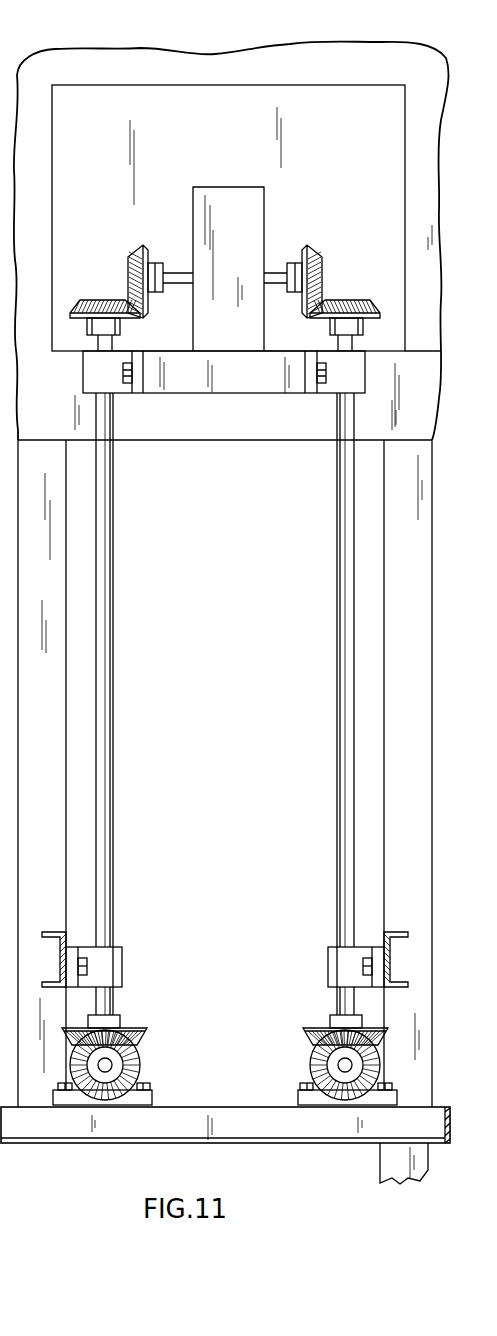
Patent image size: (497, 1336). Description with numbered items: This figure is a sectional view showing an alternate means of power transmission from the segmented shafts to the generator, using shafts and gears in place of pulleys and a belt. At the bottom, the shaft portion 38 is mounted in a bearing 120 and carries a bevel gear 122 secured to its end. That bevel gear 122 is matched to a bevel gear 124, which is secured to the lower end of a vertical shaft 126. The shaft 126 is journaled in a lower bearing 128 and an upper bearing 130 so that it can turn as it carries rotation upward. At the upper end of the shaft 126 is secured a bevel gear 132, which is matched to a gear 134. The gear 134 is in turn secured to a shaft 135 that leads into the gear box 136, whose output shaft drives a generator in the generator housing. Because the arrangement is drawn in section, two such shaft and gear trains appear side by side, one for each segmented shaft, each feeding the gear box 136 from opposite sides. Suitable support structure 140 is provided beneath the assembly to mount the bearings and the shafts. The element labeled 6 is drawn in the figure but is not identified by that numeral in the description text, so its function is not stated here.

The housing 6 is at (345, 97).
The gear box 136 is at (215, 200).
The gear 134 is at (128, 270).
The shaft 135 is at (182, 273).
The bevel gear 132 is at (132, 320).
The bearing 130 is at (122, 387).
The shaft 126 is at (108, 870).
The bearing 128 is at (110, 963).
The bevel gear 124 is at (133, 1029).
The bevel gear 122 is at (138, 1055).
The shaft portion 38 is at (112, 1066).
The bearing 120 is at (140, 1099).
The support structure 140 is at (351, 1146).